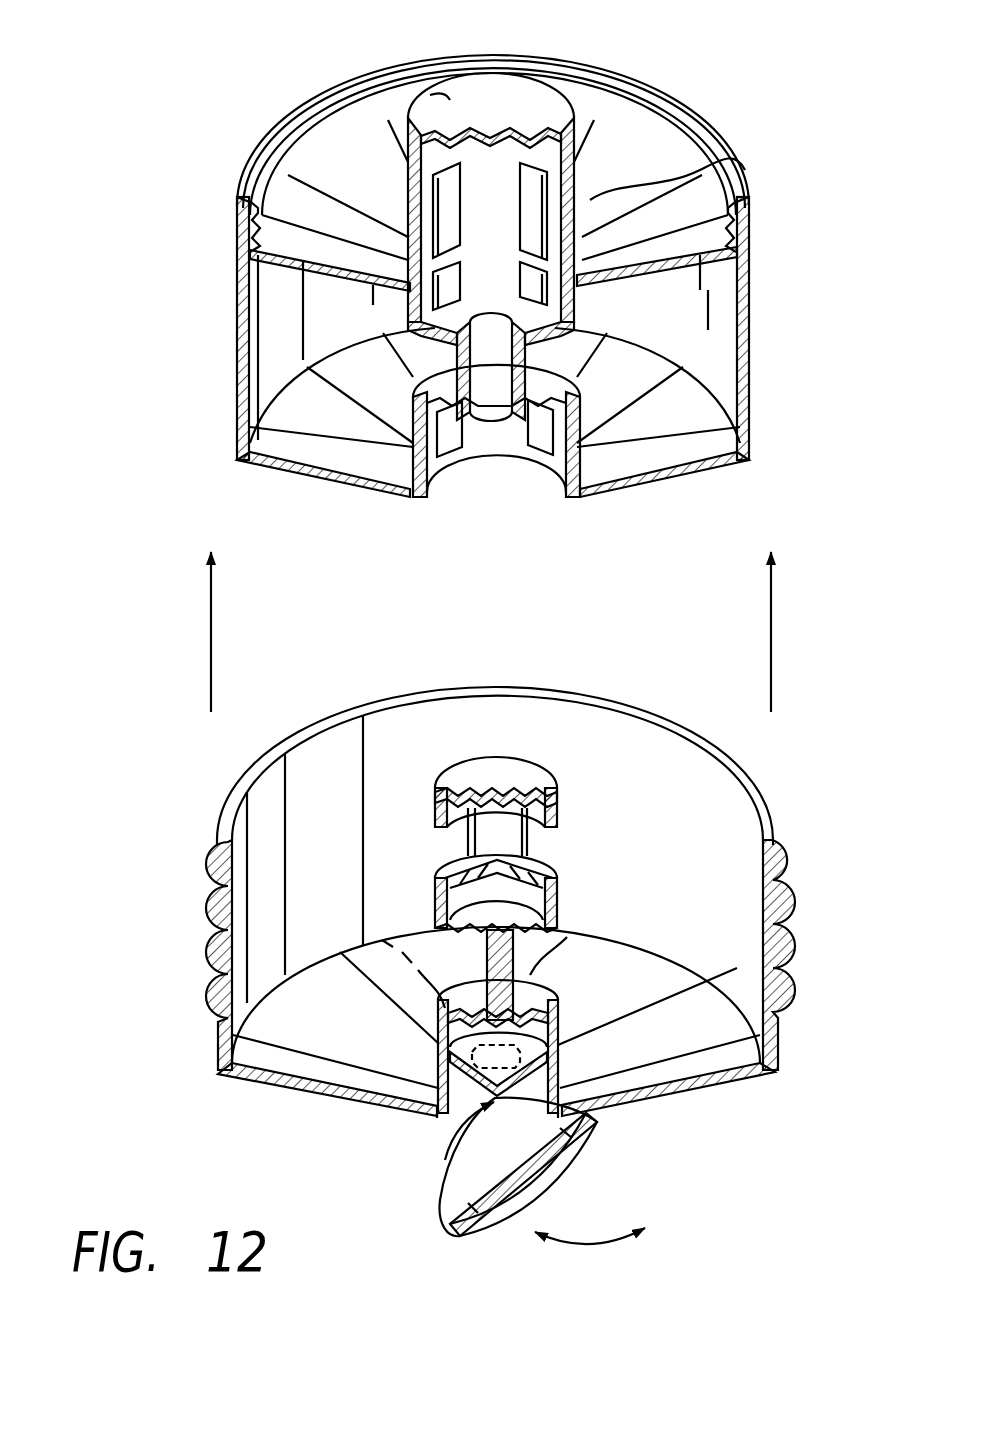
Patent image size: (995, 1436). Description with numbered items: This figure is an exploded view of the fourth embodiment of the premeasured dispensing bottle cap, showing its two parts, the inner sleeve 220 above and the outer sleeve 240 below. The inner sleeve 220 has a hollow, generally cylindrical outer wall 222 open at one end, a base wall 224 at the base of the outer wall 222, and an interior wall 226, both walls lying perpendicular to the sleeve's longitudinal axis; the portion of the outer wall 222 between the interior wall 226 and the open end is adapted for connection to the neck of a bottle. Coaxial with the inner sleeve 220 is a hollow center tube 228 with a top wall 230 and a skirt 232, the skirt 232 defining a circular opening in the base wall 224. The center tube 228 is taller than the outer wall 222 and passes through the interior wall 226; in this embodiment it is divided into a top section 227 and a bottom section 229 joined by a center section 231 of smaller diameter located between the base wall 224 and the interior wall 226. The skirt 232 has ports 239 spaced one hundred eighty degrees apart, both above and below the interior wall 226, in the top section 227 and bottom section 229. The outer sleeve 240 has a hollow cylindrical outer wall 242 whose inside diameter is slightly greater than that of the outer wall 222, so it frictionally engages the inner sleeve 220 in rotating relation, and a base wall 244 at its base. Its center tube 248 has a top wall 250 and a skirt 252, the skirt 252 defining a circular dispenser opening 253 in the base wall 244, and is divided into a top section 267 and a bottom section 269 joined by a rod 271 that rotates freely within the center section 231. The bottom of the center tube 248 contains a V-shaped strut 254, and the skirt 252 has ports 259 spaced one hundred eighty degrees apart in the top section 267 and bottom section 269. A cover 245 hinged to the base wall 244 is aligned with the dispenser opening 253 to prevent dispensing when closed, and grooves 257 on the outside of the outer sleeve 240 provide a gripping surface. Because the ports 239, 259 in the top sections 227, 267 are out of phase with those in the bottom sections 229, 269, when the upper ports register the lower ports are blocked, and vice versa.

The inner sleeve 220 is at (190, 316).
The outer wall 222 is at (237, 385).
The base wall 224 is at (285, 468).
The interior wall 226 is at (693, 300).
The top section 227 is at (745, 178).
The center tube 228 is at (418, 70).
The bottom section 229 is at (400, 460).
The top wall 230 is at (395, 97).
The center section 231 is at (527, 353).
The skirt 232 is at (560, 110).
The ports 239 is at (567, 197).
The outer sleeve 240 is at (174, 922).
The outer wall 242 is at (613, 700).
The base wall 244 is at (340, 1097).
The cover 245 is at (567, 1187).
The center tube 248 is at (576, 781).
The top wall 250 is at (503, 767).
The skirt 252 is at (643, 933).
The dispenser opening 253 is at (447, 1165).
The V-shaped strut 254 is at (438, 1070).
The grooves 257 is at (773, 878).
The ports 259 is at (530, 840).
The top section 267 is at (437, 867).
The bottom section 269 is at (558, 1032).
The rod 271 is at (567, 937).